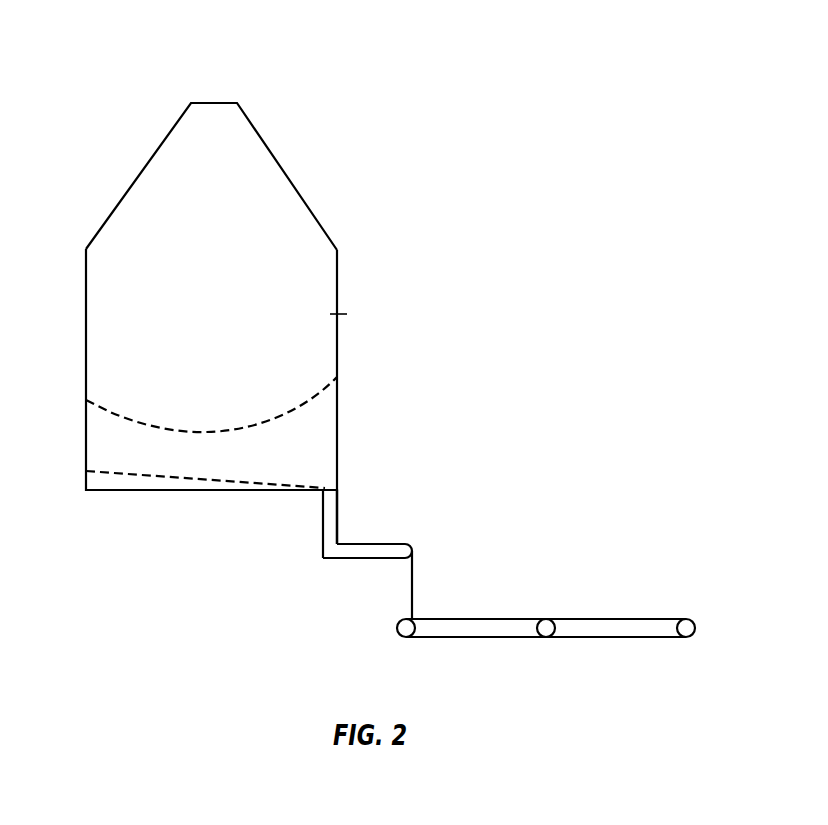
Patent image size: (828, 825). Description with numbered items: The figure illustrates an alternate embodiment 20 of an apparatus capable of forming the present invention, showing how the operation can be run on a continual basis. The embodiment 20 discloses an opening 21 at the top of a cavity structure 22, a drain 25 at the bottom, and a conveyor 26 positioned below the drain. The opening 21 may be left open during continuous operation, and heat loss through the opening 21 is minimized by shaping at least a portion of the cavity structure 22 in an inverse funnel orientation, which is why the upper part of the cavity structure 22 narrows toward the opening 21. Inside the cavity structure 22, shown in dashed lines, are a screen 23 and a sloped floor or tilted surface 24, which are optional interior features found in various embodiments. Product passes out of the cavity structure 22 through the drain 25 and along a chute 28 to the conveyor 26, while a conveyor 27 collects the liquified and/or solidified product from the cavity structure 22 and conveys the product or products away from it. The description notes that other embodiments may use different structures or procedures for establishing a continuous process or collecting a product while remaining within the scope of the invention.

The embodiment 20 is at (347, 110).
The opening 21 is at (230, 103).
The cavity structure 22 is at (327, 232).
The screen 23 is at (110, 412).
The sloped floor or tilted surface 24 is at (150, 477).
The drain 25 is at (333, 487).
The conveyor 26 is at (412, 637).
The conveyor 27 is at (692, 614).
The chute 28 is at (353, 562).